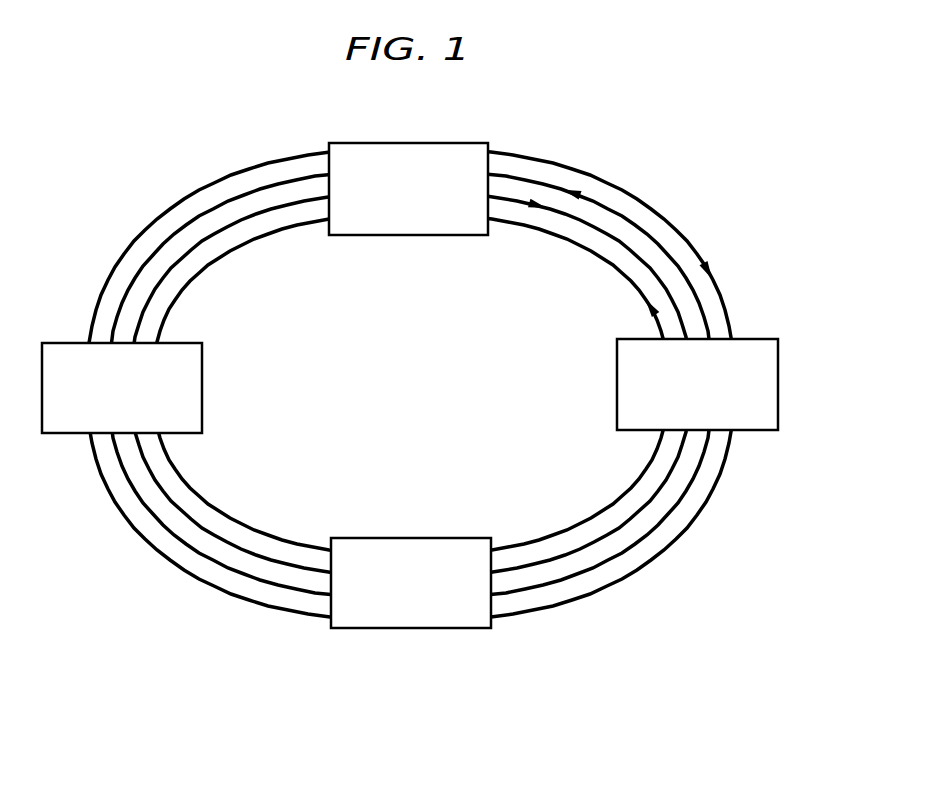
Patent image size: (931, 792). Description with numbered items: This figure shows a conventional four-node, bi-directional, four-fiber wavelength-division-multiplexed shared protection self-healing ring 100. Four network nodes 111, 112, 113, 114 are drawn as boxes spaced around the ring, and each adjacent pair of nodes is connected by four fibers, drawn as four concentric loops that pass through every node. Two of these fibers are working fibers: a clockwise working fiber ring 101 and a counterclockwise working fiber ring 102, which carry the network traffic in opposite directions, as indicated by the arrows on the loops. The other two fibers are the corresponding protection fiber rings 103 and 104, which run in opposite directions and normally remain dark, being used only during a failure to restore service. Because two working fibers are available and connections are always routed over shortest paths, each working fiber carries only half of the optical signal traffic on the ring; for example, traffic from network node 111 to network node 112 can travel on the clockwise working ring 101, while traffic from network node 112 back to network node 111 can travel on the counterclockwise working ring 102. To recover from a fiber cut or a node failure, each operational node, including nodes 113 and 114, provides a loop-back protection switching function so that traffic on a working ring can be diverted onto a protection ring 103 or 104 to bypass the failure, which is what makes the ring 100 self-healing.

The 4-fiber WDM shared protection ring 100 is at (149, 651).
The clockwise working fiber ring 101 is at (731, 325).
The counterclockwise working fiber ring 102 is at (659, 328).
The protection fiber ring 103 is at (604, 207).
The protection fiber ring 104 is at (592, 227).
The network node 111 is at (353, 143).
The network node 112 is at (778, 370).
The network node 113 is at (447, 628).
The network node 114 is at (71, 343).